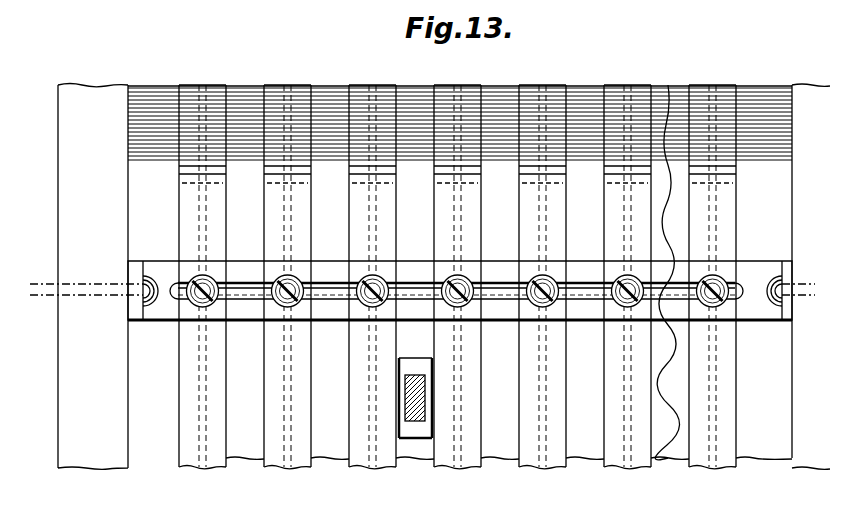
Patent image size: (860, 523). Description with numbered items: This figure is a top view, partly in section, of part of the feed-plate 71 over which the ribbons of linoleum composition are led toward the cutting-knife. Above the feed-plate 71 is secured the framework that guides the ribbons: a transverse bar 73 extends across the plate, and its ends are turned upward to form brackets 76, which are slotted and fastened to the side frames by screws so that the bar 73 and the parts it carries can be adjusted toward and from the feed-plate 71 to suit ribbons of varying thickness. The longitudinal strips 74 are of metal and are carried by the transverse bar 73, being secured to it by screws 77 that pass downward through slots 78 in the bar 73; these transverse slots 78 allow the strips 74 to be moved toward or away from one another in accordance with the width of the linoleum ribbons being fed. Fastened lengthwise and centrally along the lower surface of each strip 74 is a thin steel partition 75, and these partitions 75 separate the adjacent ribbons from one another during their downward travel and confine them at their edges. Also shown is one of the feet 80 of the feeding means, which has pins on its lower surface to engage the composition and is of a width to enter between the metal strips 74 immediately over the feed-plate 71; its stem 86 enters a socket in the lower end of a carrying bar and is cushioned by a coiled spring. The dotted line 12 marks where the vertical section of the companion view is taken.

The section line 12 is at (429, 285).
The feed-plate 71 is at (460, 273).
The transverse bars 73 is at (512, 323).
The longitudinal strips 74 is at (626, 186).
The partitions 75 is at (628, 466).
The brackets 76 is at (781, 262).
The screws 77 is at (555, 278).
The slots 78 is at (595, 293).
The feet 80 is at (420, 440).
The stems 86 is at (425, 392).